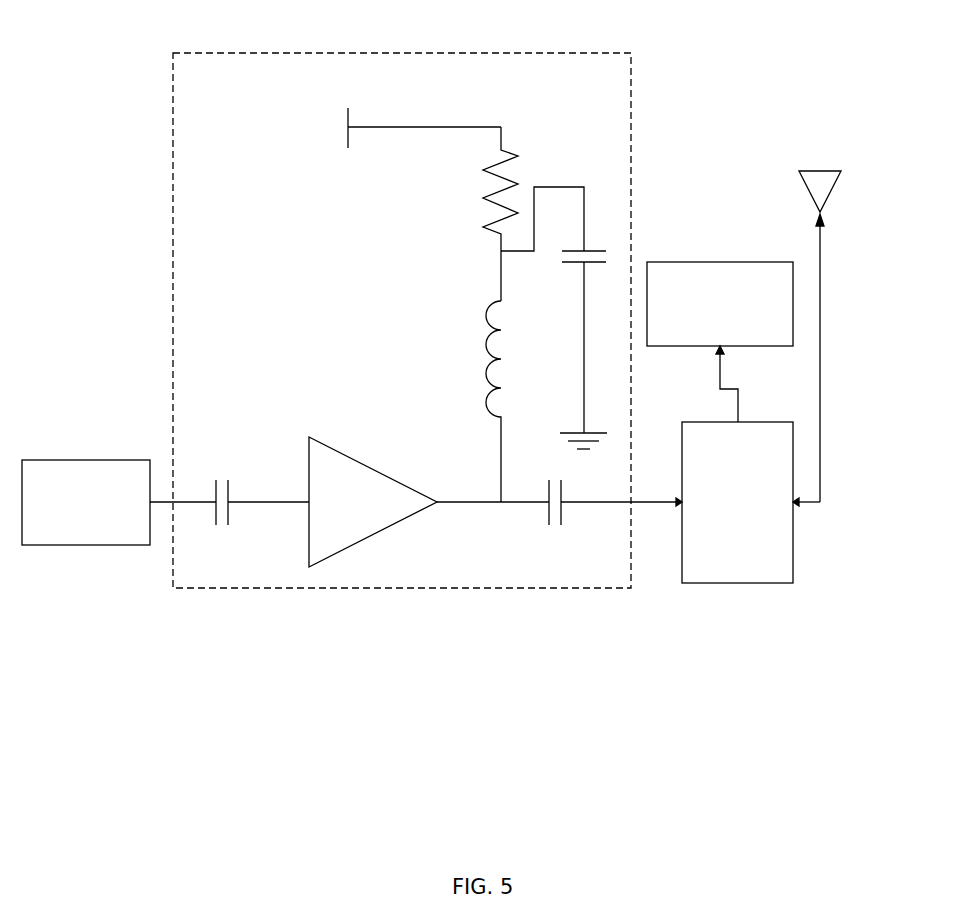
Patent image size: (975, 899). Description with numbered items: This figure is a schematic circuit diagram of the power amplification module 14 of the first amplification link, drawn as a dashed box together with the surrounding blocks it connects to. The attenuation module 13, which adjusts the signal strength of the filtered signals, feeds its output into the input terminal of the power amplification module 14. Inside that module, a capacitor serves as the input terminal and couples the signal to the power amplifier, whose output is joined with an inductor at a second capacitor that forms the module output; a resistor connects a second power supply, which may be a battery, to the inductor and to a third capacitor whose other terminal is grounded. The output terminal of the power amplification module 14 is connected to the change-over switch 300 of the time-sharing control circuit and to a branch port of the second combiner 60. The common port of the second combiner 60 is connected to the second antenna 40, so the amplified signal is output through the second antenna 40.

The power amplification module 14 is at (340, 53).
The attenuation module 13 is at (88, 460).
The second combiner 60 is at (742, 422).
The change-over switch 300 is at (718, 262).
The second antenna 40 is at (827, 171).